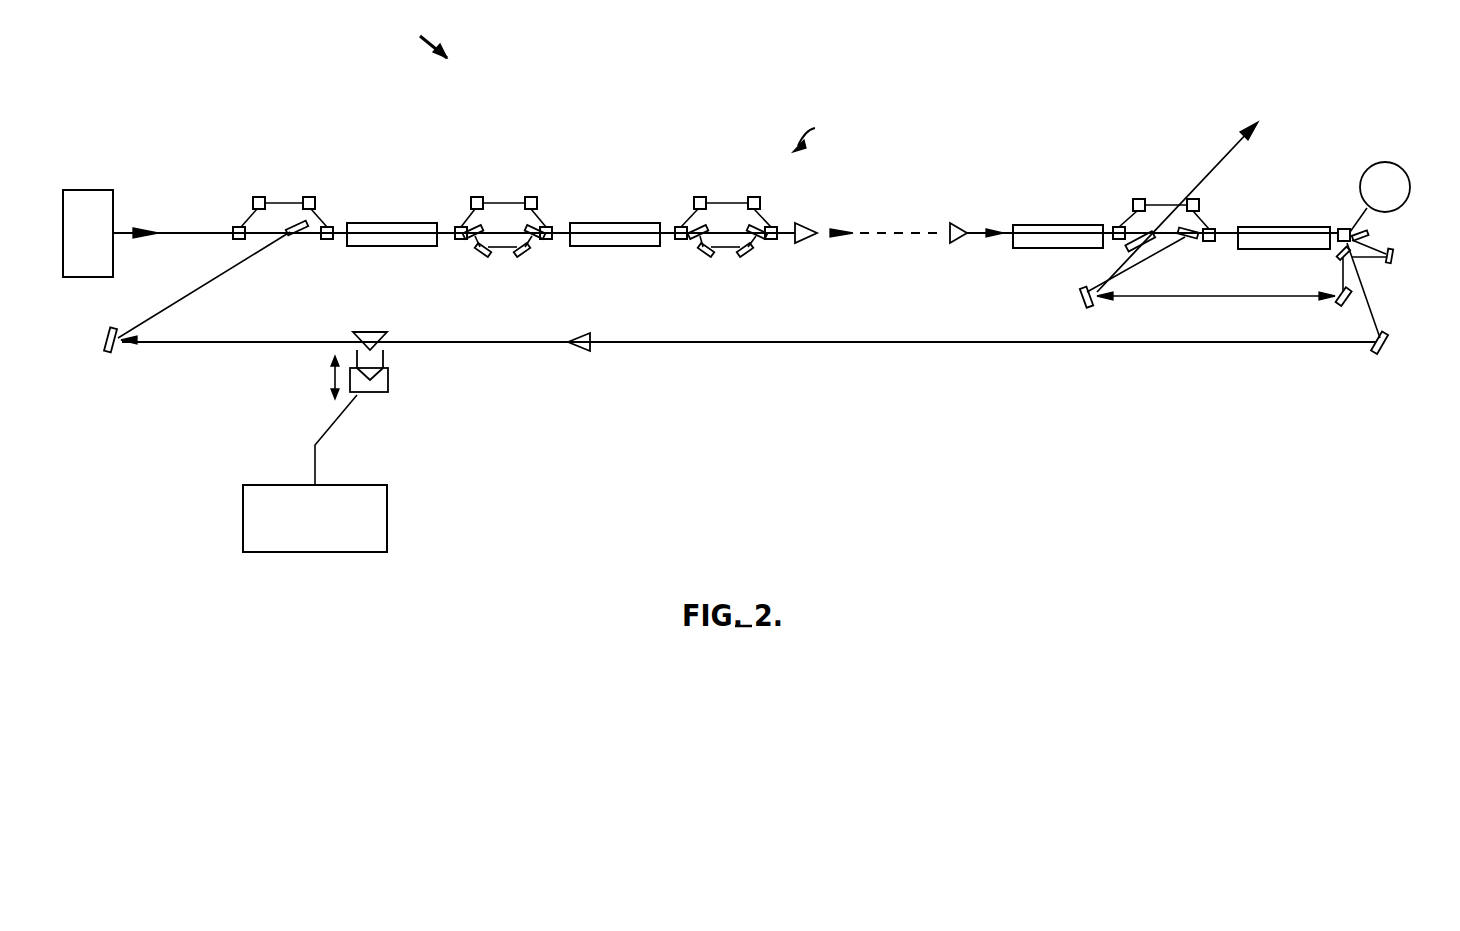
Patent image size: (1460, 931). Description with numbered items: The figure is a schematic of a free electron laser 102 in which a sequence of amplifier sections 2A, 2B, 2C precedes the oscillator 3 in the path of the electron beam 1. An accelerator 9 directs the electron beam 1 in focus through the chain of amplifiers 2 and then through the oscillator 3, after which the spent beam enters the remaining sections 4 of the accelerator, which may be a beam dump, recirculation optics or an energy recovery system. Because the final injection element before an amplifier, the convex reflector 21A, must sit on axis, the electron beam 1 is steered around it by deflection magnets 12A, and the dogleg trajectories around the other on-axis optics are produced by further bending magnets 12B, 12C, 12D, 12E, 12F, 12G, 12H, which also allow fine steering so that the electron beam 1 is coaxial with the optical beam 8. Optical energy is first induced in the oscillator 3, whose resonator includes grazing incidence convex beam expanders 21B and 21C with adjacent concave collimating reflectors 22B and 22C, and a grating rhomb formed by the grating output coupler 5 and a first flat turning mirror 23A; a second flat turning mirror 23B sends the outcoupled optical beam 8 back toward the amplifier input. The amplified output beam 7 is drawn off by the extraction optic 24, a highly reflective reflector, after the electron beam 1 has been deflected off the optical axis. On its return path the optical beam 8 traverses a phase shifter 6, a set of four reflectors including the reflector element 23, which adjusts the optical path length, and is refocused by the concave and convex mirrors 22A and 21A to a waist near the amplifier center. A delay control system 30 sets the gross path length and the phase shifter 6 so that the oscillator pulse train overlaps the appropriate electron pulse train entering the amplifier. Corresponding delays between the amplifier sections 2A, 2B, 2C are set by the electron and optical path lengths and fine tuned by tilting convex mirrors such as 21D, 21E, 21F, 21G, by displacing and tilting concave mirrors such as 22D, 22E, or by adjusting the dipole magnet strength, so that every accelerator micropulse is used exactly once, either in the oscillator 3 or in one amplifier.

The laser 102 is at (417, 43).
The free electron amplifier 2 is at (811, 136).
The accelerator 9 is at (105, 190).
The electron beam 1 is at (196, 232).
The deflection magnets 12A is at (238, 227).
The convex reflector 21A is at (296, 236).
The amplifier section 2A is at (428, 223).
The bending magnets 12B is at (474, 199).
The grazing incidence convex beam expander 21B is at (468, 240).
The concave collimating reflector 22B is at (522, 256).
The bending magnets 12C is at (538, 200).
The convex extraction reflector 21C is at (542, 240).
The amplifier section 2B is at (650, 223).
The bending magnets 12D is at (680, 226).
The beam splitter 21D is at (696, 240).
The concave collimating reflector 22C is at (710, 256).
The bending magnets 12E is at (760, 202).
The beam splitter 21E is at (763, 240).
The optical beam 8 is at (810, 228).
The amplifier section 2C is at (1090, 225).
The beam steering mirrors 12F is at (1135, 202).
The extraction optic 24 is at (1128, 246).
The beam steering mirrors 12G is at (1200, 206).
The beam splitter 21F is at (1188, 240).
The output beam 7 is at (1222, 160).
The oscillator 3 is at (1290, 227).
The beam steering mirror 12H is at (1344, 228).
The remaining sections of the accelerator 4 is at (1363, 172).
The beam splitter 21G is at (1369, 234).
The reflector 22D is at (1393, 258).
The grating output coupler 5 is at (1337, 258).
The reflector 22E is at (1080, 297).
The first flat turning mirror 23A is at (1348, 305).
The second flat turning mirror 23B is at (1385, 352).
The concave mirror 22A is at (106, 345).
The adjustable delay prism 23 is at (365, 332).
The phase shifter 6 is at (380, 392).
The delay control system 30 is at (355, 485).